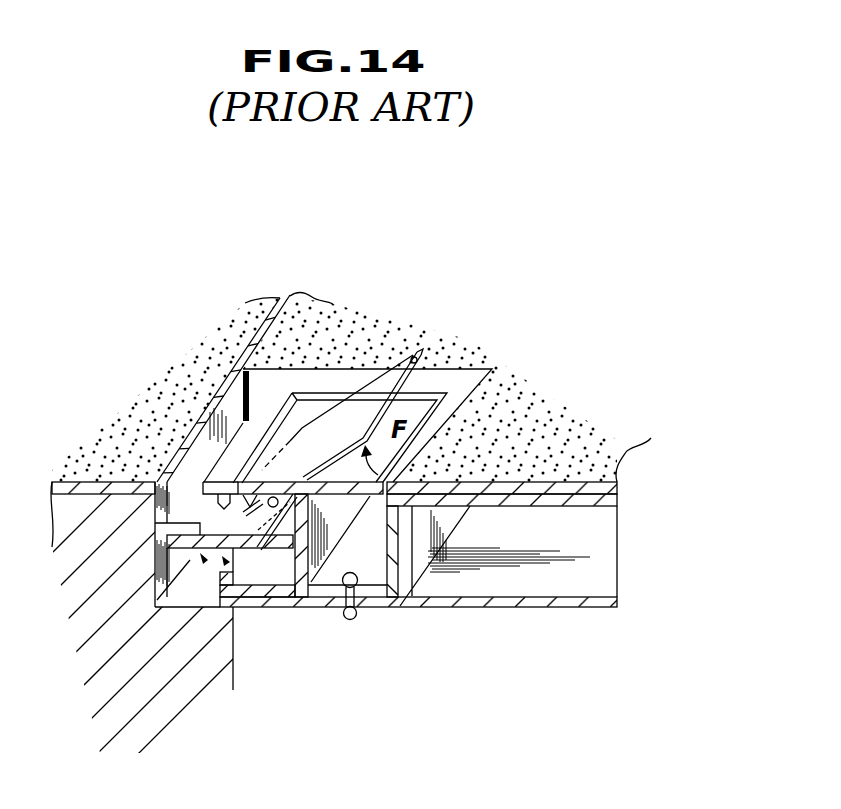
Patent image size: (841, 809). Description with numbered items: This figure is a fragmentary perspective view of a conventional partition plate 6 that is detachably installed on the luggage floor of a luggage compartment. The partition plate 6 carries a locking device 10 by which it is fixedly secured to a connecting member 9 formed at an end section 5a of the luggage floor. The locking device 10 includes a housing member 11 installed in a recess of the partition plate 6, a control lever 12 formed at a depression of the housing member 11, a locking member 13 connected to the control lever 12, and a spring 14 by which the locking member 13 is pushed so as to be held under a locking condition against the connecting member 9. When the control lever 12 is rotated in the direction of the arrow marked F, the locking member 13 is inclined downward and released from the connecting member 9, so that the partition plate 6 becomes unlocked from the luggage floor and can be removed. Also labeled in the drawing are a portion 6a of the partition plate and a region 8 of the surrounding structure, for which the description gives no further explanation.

The end section 5a is at (155, 573).
The partition plate 6 is at (597, 418).
The frame bottom wall 6a is at (387, 603).
The earth fill 8 is at (520, 424).
The connecting member 9 is at (195, 500).
The locking device 10 is at (467, 383).
The housing member 11 is at (467, 368).
The control lever 12 is at (303, 412).
The locking member 13 is at (282, 545).
The spring 14 is at (310, 518).